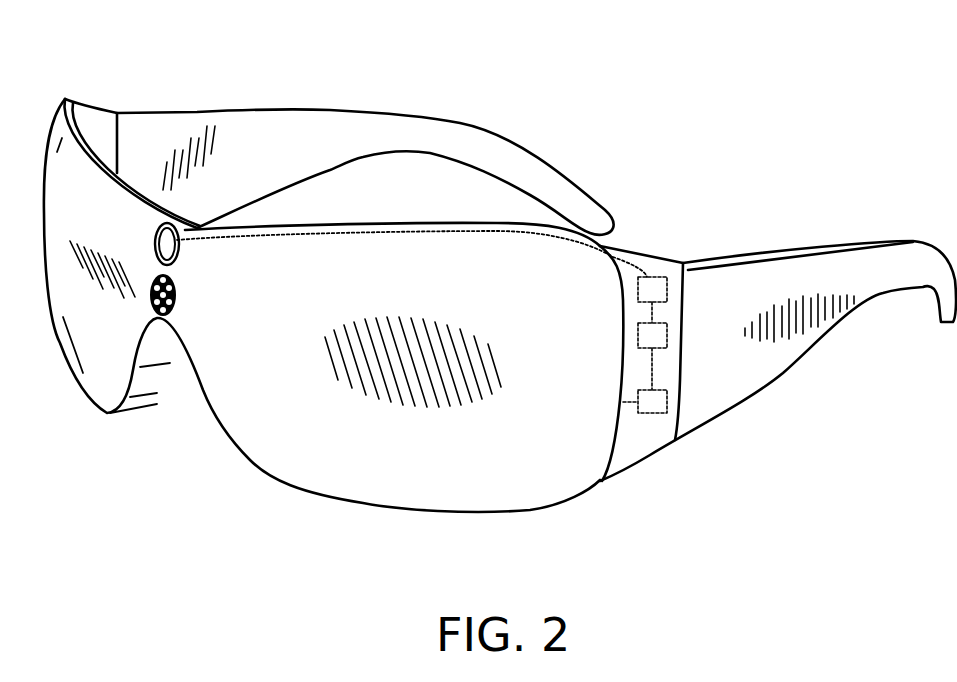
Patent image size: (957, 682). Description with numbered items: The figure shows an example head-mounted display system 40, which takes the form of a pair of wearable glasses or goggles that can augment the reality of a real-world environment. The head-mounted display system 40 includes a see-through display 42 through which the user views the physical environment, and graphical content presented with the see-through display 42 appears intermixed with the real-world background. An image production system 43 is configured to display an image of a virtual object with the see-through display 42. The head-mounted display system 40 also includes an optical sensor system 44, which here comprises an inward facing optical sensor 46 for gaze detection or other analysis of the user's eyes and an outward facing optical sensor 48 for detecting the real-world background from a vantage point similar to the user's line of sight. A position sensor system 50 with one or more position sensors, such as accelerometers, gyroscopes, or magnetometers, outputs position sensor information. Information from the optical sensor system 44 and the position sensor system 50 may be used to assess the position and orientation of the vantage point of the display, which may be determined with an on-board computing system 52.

The head-mounted display system 40 is at (589, 85).
The see-through display 42 is at (362, 410).
The image production system 43 is at (652, 402).
The optical sensor system 44 is at (212, 192).
The inward facing optical sensor 46 is at (170, 240).
The outward facing optical sensor 48 is at (168, 316).
The position sensor system 50 is at (660, 333).
The on-board computing system 52 is at (657, 287).